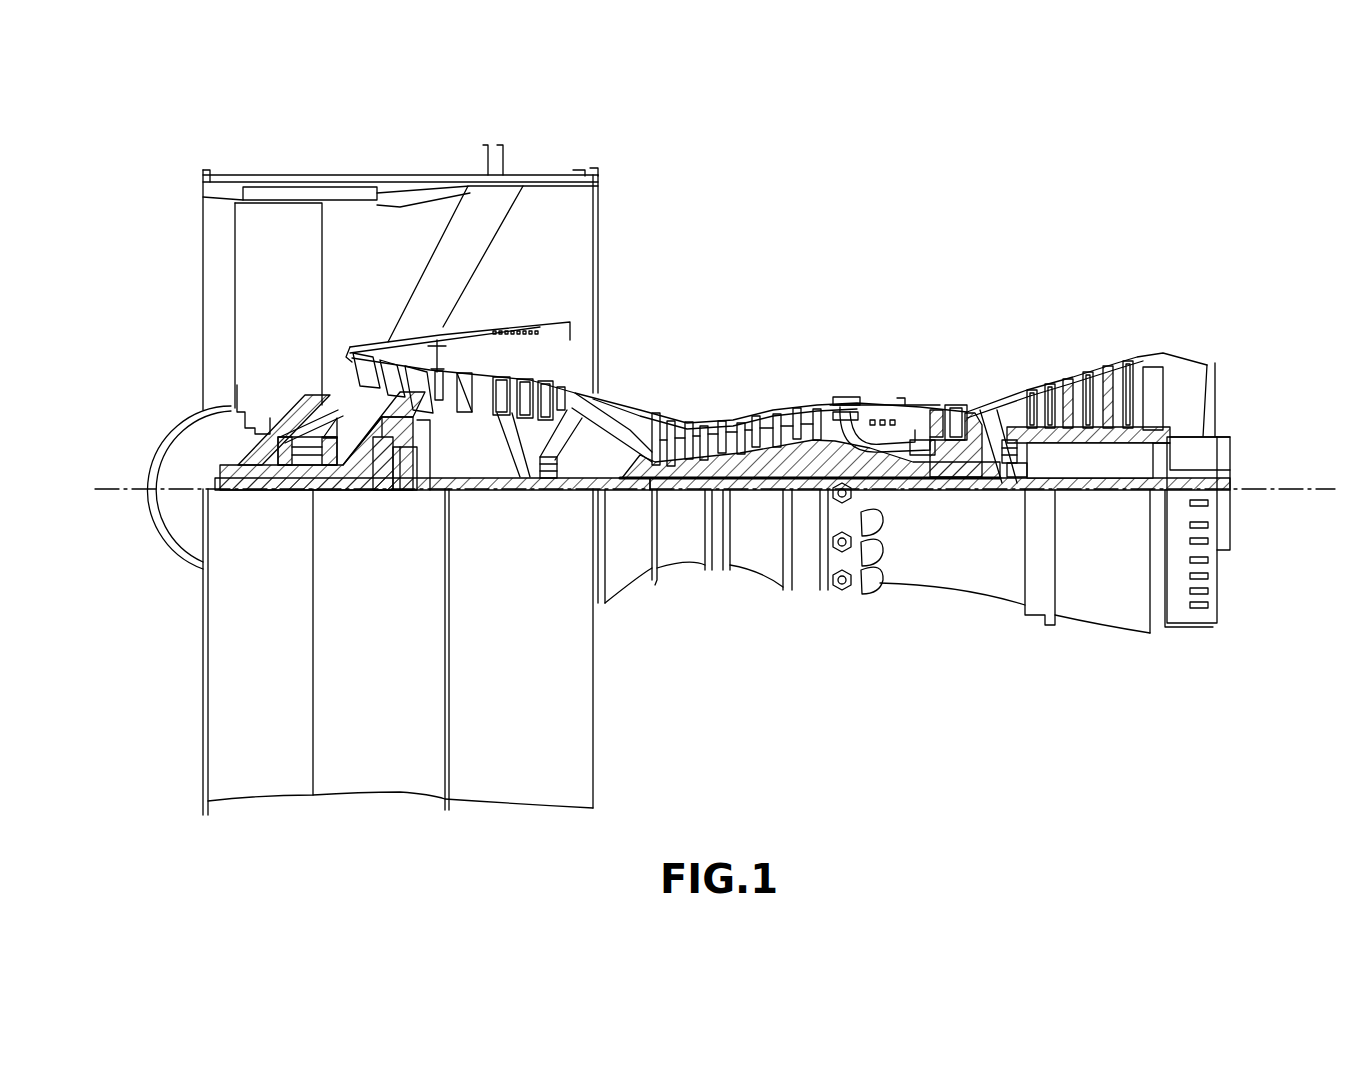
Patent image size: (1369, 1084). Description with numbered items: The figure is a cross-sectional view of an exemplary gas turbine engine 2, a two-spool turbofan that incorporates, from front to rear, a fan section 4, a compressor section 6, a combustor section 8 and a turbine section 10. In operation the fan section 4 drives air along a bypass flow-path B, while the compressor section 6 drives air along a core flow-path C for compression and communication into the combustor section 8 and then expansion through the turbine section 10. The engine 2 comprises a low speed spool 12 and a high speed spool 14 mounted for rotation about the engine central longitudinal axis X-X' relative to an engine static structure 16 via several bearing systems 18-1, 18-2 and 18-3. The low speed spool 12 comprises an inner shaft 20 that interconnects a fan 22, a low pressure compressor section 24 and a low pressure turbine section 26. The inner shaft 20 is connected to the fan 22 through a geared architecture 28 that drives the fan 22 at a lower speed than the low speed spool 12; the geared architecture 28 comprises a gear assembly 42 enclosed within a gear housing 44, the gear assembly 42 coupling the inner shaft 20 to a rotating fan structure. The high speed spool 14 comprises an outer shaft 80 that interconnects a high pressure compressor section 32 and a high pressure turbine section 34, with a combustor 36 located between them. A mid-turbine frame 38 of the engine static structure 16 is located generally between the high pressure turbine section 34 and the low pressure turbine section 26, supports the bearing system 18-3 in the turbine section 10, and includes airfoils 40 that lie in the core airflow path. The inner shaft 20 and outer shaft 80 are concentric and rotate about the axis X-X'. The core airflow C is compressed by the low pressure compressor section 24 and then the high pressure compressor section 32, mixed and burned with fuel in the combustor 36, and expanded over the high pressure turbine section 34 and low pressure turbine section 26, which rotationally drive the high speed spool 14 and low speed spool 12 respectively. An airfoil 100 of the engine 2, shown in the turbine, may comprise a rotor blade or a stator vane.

The gas turbine engine 2 is at (932, 214).
The fan section 4 is at (443, 160).
The compressor section 6 is at (450, 292).
The combustor section 8 is at (940, 292).
The turbine section 10 is at (1160, 292).
The low speed spool 12 is at (768, 503).
The high speed spool 14 is at (803, 460).
The engine static structure 16 is at (375, 777).
The bearing system 18-1 is at (290, 467).
The bearing system 18-2 is at (548, 470).
The bearing system 18-3 is at (995, 470).
The inner shaft 20 is at (613, 492).
The fan 22 is at (290, 303).
The low pressure compressor section 24 is at (523, 390).
The low pressure turbine section 26 is at (1085, 380).
The geared architecture 28 is at (410, 504).
The high pressure compressor section 32 is at (742, 455).
The high pressure turbine section 34 is at (950, 404).
The combustor 36 is at (878, 432).
The mid-turbine frame 38 is at (990, 420).
The airfoils 40 is at (1000, 430).
The gear assembly 42 is at (420, 490).
The gear housing 44 is at (417, 440).
The outer shaft 80 is at (875, 480).
The airfoil 100 is at (1068, 382).
The bypass flow-path B is at (413, 260).
The core flow-path C is at (344, 370).
The engine central longitudinal axis X is at (110, 456).
The engine central longitudinal axis X' is at (1271, 456).